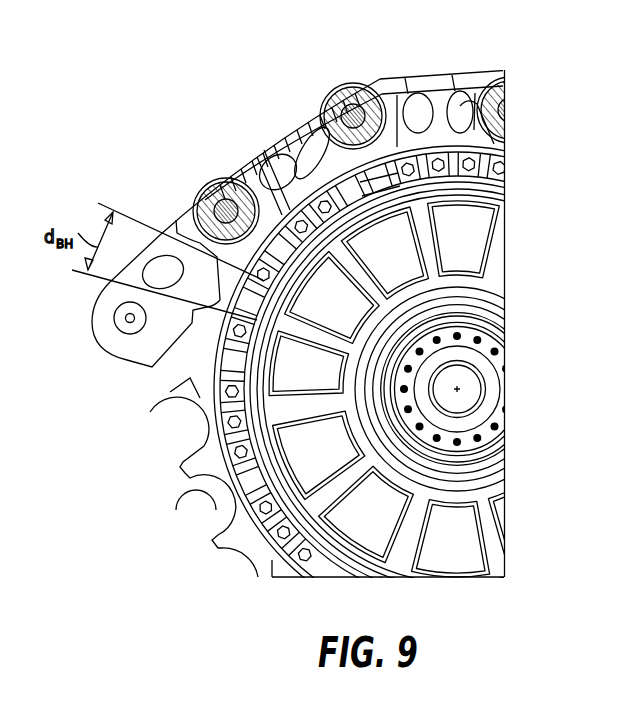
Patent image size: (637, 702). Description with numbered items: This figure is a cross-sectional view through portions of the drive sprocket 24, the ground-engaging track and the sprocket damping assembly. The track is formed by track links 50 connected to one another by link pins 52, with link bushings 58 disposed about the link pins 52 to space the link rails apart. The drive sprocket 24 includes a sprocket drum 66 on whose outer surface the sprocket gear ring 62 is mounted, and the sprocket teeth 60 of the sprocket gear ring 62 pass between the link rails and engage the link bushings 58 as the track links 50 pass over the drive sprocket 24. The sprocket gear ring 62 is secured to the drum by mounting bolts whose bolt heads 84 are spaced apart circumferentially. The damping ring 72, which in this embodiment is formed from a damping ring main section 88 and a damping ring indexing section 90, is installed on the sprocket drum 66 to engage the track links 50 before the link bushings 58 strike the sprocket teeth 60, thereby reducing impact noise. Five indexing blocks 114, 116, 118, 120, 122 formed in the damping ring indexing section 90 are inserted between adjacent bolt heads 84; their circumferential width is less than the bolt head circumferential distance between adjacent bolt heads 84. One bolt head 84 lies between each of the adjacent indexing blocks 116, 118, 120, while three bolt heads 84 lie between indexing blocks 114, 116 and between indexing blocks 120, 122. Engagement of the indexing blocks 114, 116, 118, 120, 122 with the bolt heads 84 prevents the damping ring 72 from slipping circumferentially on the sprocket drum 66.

The drive sprocket 24 is at (500, 317).
The track links 50 is at (445, 80).
The link pins 52 is at (240, 203).
The link bushings 58 is at (207, 208).
The sprocket teeth 60 is at (182, 468).
The sprocket gear ring 62 is at (285, 572).
The sprocket drum 66 is at (504, 200).
The damping ring 72 is at (504, 158).
The bolt heads 84 is at (288, 125).
The damping ring main section 88 is at (504, 184).
The damping ring indexing section 90 is at (257, 398).
The indexing block 114 is at (381, 196).
The indexing block 116 is at (266, 214).
The indexing block 118 is at (262, 301).
The indexing block 120 is at (236, 372).
The indexing block 122 is at (223, 495).